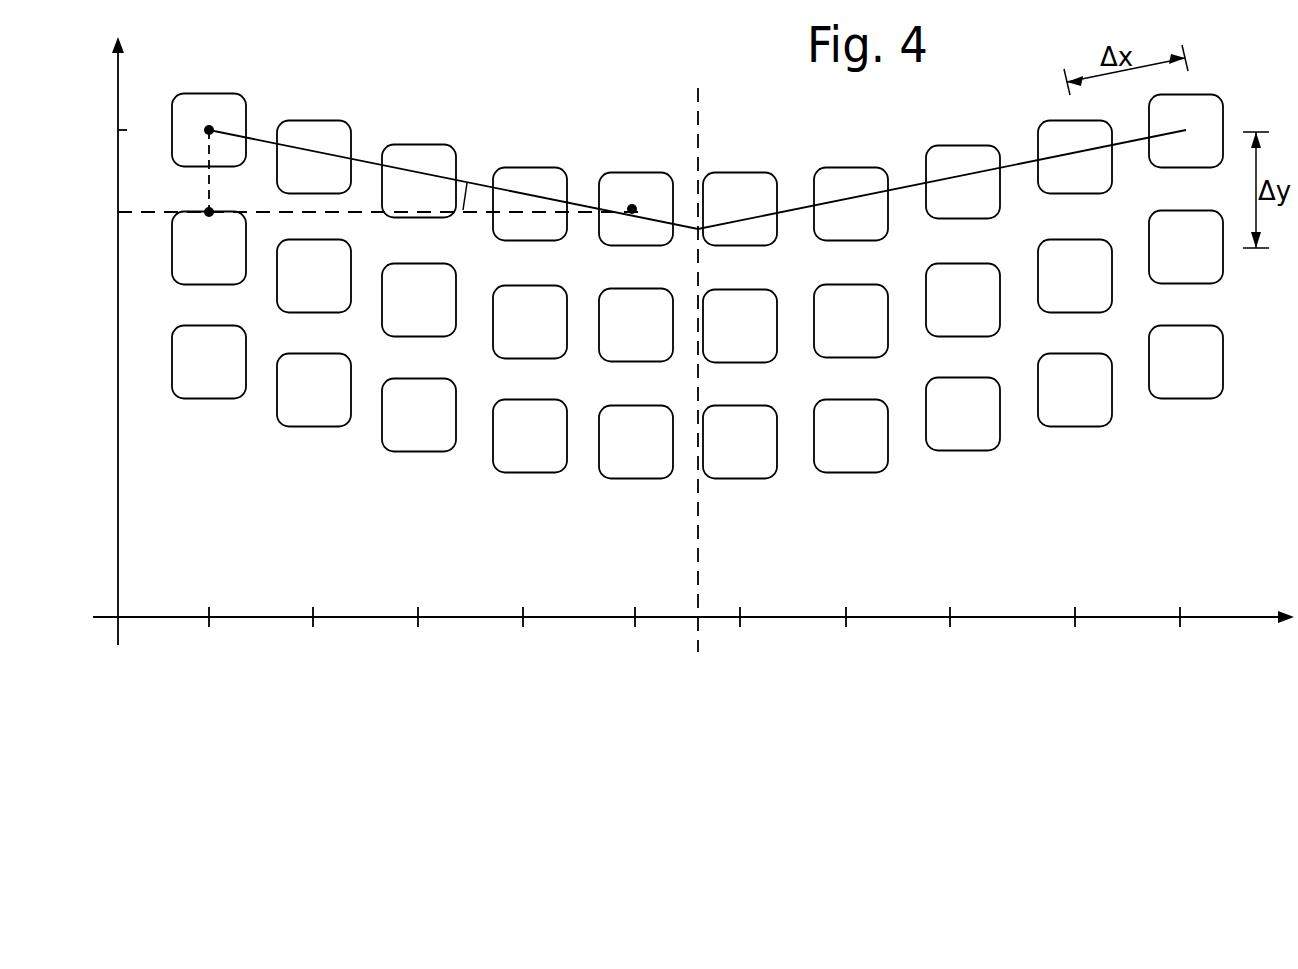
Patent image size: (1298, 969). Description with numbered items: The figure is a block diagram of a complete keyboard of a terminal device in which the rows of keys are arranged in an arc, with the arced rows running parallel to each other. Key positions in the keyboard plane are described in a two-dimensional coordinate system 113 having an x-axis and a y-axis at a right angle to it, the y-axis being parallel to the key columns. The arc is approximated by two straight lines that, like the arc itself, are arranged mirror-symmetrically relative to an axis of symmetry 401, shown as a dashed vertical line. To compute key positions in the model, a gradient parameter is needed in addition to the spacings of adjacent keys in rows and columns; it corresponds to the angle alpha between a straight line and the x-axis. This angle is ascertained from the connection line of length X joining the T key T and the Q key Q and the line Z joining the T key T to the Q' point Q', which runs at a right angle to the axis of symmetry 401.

The two-dimensional coordinate system 113 is at (143, 618).
The axis of symmetry 401 is at (699, 537).
The Q key Q is at (216, 107).
The Q' point Q' is at (217, 226).
The T key T is at (642, 187).